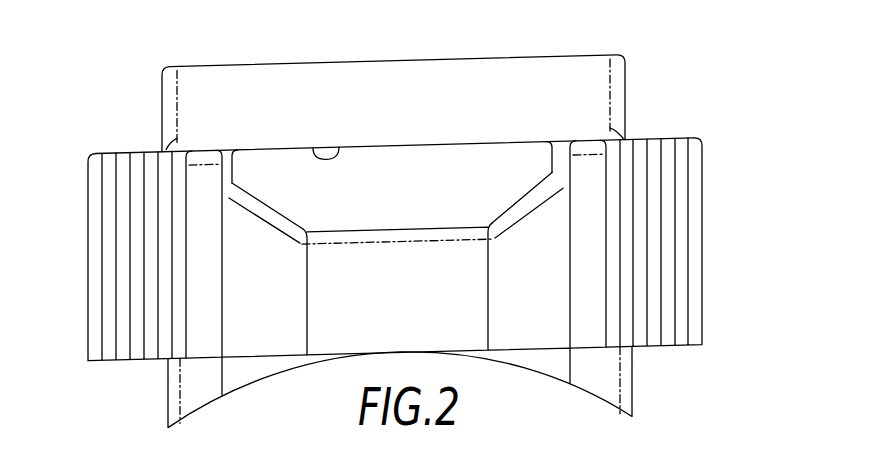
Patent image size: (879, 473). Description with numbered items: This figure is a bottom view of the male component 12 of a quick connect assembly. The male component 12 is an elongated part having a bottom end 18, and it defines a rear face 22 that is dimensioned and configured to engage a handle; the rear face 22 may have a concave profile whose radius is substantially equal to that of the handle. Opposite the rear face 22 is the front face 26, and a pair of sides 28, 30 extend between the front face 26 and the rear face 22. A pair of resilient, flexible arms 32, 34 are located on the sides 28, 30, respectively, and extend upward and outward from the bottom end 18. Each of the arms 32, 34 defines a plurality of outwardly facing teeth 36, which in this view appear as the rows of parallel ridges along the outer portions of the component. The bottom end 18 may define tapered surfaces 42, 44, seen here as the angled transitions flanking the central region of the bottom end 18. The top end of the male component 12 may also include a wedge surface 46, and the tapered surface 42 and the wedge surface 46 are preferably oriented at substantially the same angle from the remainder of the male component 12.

The male component 12 is at (654, 70).
The bottom end 18 is at (397, 303).
The rear face 22 is at (243, 382).
The front face 26 is at (313, 144).
The side 28 is at (208, 177).
The side 30 is at (586, 170).
The resilient, flexible arm 32 is at (208, 332).
The resilient, flexible arm 34 is at (587, 327).
The outwardly facing teeth 36 is at (116, 242).
The tapered surface 42 is at (413, 200).
The tapered surface 44 is at (264, 283).
The wedge surface 46 is at (452, 107).